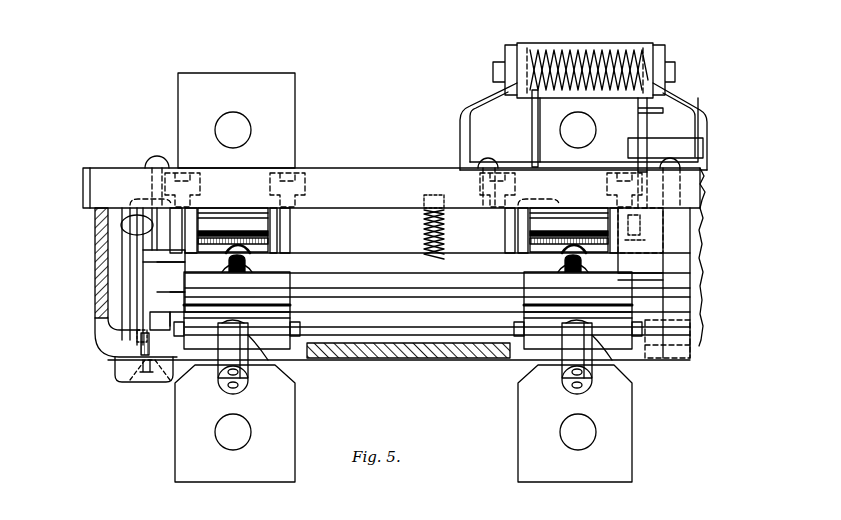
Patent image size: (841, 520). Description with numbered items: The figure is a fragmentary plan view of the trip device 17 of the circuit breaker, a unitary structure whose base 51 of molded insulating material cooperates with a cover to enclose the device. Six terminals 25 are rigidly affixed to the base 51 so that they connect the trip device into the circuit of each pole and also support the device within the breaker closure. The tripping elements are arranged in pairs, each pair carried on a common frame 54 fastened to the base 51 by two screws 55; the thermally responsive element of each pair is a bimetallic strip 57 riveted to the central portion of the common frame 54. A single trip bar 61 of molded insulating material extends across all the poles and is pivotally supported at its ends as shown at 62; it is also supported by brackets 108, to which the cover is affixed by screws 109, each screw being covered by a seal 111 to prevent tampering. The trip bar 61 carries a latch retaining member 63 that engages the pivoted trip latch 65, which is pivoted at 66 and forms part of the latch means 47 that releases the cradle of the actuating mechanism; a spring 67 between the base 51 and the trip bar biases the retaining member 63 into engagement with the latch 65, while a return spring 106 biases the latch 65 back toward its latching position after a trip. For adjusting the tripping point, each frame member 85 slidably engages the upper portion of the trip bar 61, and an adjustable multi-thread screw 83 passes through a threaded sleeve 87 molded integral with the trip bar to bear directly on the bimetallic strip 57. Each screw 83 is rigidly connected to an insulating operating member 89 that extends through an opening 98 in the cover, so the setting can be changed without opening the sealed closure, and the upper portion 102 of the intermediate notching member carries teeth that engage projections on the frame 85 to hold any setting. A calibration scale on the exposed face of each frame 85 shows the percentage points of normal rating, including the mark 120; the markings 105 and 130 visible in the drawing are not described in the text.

The trip device 17 is at (390, 139).
The terminals 25 is at (293, 105).
The latch means 47 is at (502, 133).
The base 51 is at (340, 179).
The common frame 54 is at (135, 240).
The screws 55 is at (708, 250).
The bimetallic strip 57 is at (262, 252).
The trip bar 61 is at (408, 273).
The pivotal support 62 is at (100, 220).
The latch retaining member 63 is at (660, 273).
The trip latch 65 is at (580, 46).
The pivot 66 is at (676, 70).
The spring 67 is at (425, 240).
The adjustable screw 83 is at (400, 276).
The frame member 85 is at (284, 303).
The threaded sleeve 87 is at (252, 278).
The operating member 89 is at (216, 370).
The opening 98 is at (315, 360).
The upper portion of intermediate member 102 is at (274, 360).
The guide rail 105 is at (176, 315).
The return spring 106 is at (538, 127).
The brackets 108 is at (130, 272).
The screws 109 is at (140, 342).
The seal 111 is at (134, 372).
The calibration point 120 is at (444, 344).
The port 130 is at (373, 344).